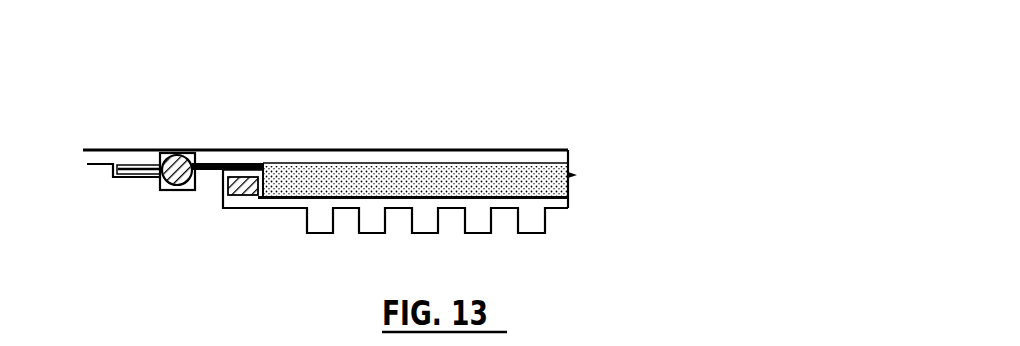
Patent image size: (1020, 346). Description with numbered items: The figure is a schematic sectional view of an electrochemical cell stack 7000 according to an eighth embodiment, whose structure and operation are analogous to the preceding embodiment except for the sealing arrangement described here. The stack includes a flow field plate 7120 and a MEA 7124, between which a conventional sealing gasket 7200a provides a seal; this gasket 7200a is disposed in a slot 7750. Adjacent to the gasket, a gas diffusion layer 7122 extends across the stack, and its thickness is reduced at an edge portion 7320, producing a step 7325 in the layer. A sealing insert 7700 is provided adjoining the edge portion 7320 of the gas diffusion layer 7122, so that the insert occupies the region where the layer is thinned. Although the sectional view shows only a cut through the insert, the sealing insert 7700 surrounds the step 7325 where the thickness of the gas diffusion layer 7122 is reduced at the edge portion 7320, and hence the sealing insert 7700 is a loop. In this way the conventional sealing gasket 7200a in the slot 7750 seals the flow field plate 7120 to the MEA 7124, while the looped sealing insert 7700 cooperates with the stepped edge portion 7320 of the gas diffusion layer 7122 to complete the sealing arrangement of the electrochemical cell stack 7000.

The electrochemical cell stack 7000 is at (620, 176).
The flow field plate 7120 is at (550, 220).
The gas diffusion layer 7122 is at (433, 178).
The MEA 7124 is at (530, 150).
The conventional sealing gasket 7200a is at (170, 150).
The edge portion 7320 is at (250, 200).
The step 7325 is at (263, 163).
The sealing insert 7700 is at (243, 163).
The slot 7750 is at (196, 156).